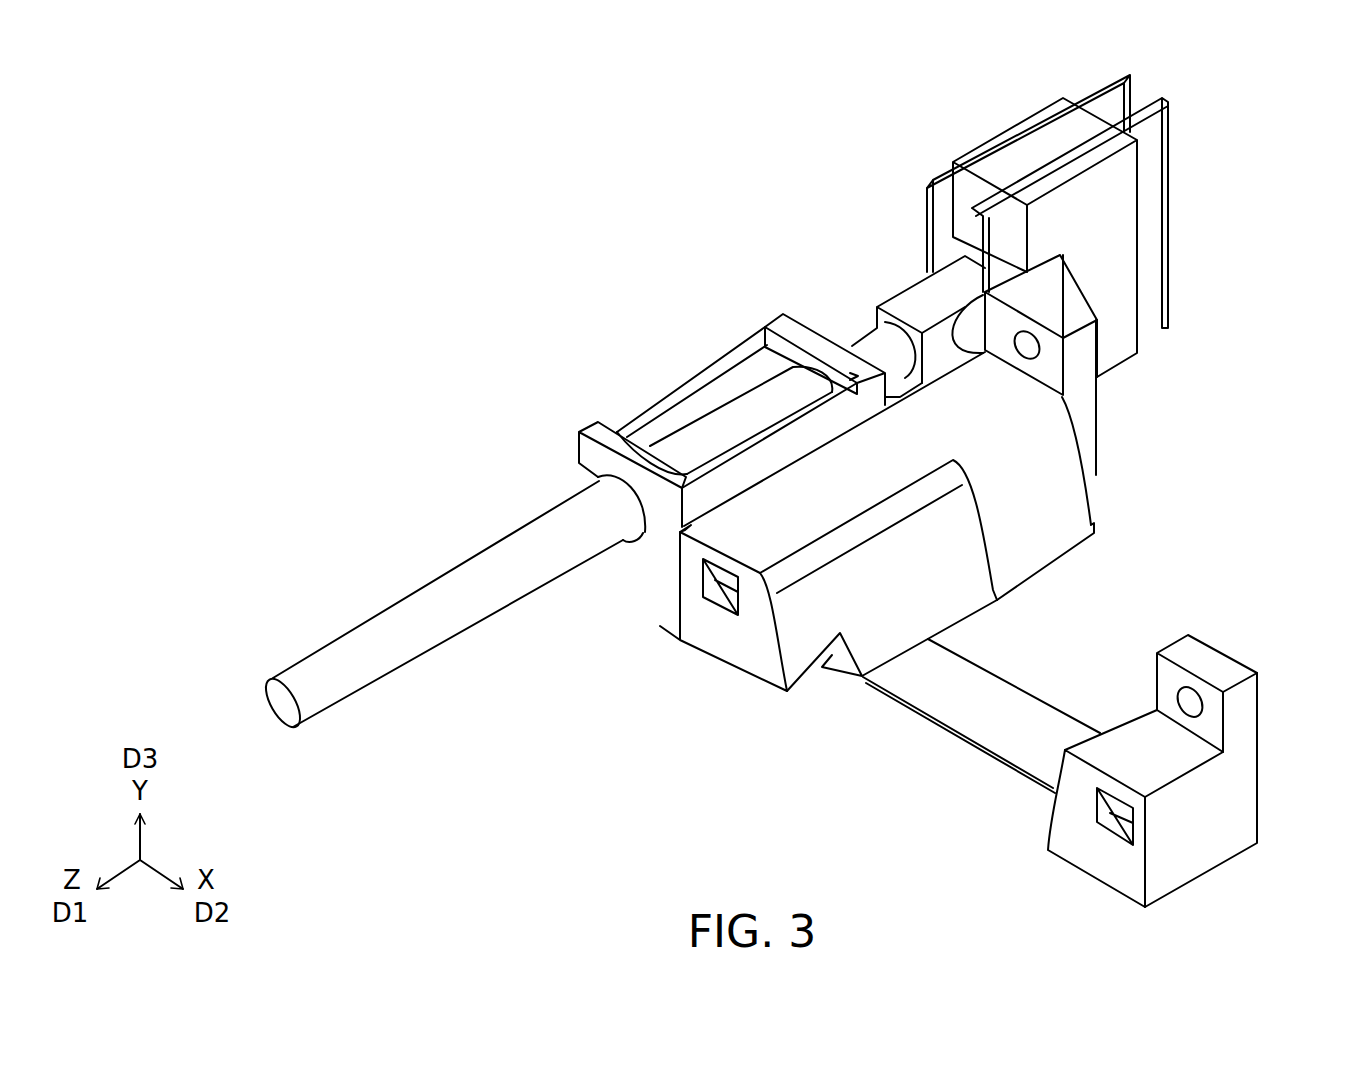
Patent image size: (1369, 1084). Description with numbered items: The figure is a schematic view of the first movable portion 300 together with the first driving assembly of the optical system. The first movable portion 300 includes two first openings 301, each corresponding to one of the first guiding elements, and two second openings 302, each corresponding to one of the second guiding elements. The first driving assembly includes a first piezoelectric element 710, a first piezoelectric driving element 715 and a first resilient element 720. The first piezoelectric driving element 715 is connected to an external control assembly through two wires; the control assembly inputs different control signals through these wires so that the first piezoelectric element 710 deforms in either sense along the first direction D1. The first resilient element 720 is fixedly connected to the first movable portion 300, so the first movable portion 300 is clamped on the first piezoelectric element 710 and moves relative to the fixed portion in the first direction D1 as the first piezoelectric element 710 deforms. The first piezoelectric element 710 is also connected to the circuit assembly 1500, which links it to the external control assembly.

The first movable portion 300 is at (1062, 517).
The first opening 301 is at (703, 577).
The second opening 302 is at (1027, 348).
The first piezoelectric element 710 is at (407, 620).
The first piezoelectric driving element 715 is at (1037, 150).
The first resilient element 720 is at (716, 400).
The circuit assembly 1500 is at (993, 727).